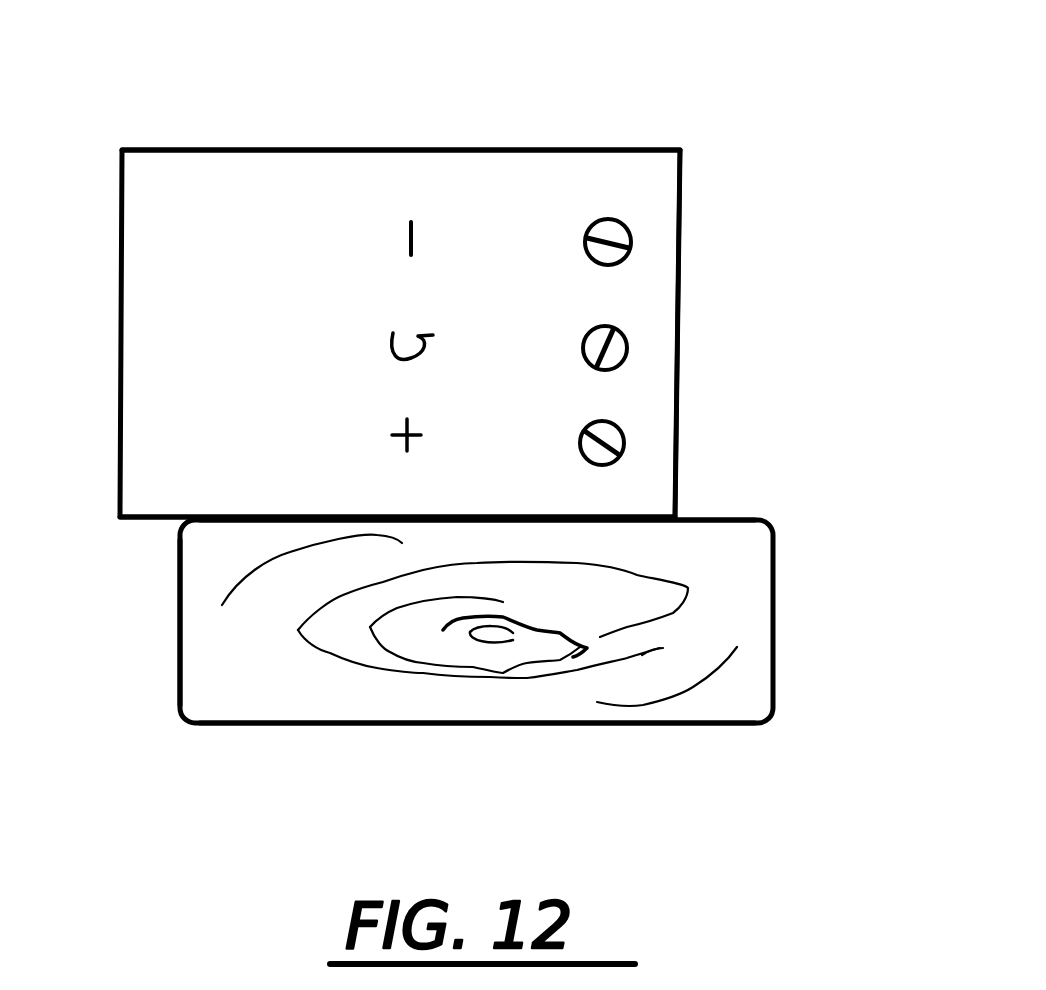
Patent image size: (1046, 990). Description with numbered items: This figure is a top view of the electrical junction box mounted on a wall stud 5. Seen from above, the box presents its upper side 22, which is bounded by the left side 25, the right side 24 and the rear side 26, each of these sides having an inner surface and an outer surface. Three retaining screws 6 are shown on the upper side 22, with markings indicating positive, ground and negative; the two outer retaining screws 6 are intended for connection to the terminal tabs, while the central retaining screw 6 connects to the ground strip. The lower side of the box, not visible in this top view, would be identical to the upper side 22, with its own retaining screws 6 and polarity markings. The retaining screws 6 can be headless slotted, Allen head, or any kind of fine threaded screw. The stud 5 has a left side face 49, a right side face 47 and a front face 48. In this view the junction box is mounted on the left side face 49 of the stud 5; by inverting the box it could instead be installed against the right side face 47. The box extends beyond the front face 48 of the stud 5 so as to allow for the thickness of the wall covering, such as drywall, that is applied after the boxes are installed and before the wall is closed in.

The upper side 22 is at (270, 217).
The left side 25 is at (490, 147).
The retaining screws 6 is at (630, 223).
The rear side 26 is at (680, 375).
The right side 24 is at (160, 518).
The stud 5 is at (780, 617).
The left side face 49 is at (710, 515).
The right side face 47 is at (667, 728).
The front face 48 is at (182, 632).